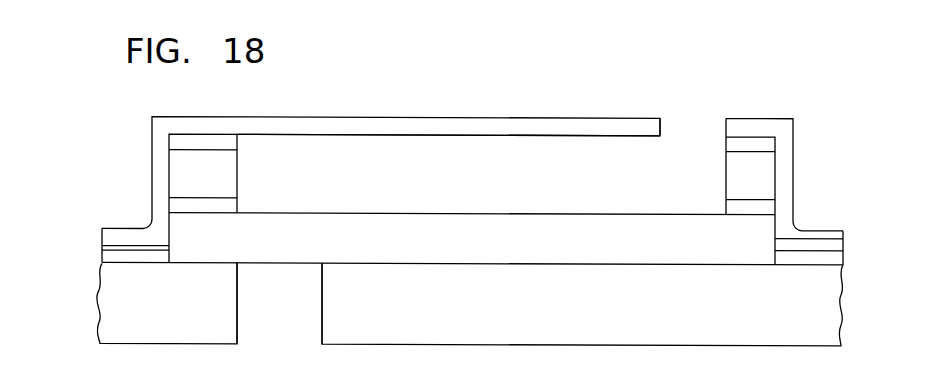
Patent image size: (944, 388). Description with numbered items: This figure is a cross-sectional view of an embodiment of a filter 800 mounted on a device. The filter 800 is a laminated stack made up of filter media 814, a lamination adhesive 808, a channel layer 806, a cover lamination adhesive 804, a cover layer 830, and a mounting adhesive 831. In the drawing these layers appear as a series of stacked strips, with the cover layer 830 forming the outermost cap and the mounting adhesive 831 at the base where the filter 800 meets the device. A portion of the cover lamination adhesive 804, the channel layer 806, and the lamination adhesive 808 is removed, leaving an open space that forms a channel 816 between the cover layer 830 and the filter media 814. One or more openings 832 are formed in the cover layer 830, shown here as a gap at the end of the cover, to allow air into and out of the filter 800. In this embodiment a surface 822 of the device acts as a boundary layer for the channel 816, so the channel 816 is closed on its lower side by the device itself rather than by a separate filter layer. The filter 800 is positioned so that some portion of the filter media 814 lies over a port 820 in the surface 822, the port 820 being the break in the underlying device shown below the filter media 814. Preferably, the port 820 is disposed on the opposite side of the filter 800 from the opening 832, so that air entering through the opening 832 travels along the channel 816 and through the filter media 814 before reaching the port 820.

The filter 800 is at (511, 107).
The cover lamination adhesive 804 is at (775, 146).
The channel layer 806 is at (775, 172).
The lamination adhesive 808 is at (775, 205).
The filter media 814 is at (775, 234).
The channel 816 is at (596, 173).
The port 820 is at (278, 303).
The surface 822 is at (113, 262).
The cover layer 830 is at (152, 145).
The mounting adhesive 831 is at (843, 257).
The opening 832 is at (688, 135).